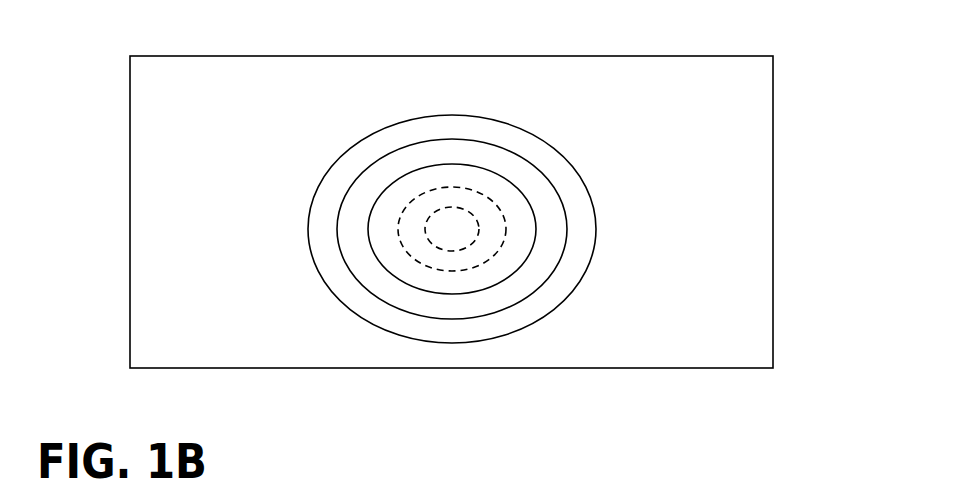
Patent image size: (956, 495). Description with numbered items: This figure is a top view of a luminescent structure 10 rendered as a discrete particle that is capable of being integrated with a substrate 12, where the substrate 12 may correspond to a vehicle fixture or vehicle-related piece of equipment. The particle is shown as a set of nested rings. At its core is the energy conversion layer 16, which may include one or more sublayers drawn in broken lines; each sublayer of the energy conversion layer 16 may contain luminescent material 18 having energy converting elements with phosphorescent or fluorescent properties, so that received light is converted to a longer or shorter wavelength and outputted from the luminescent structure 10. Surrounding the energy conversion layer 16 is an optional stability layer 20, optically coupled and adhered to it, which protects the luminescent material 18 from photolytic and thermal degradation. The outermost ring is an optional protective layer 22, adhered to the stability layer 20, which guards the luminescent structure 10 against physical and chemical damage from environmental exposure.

The luminescent structure 10 is at (487, 212).
The substrate 12 is at (773, 164).
The energy conversion layer 16 is at (510, 278).
The luminescent material 18 is at (438, 245).
The stability layer 20 is at (521, 155).
The protective layer 22 is at (492, 118).